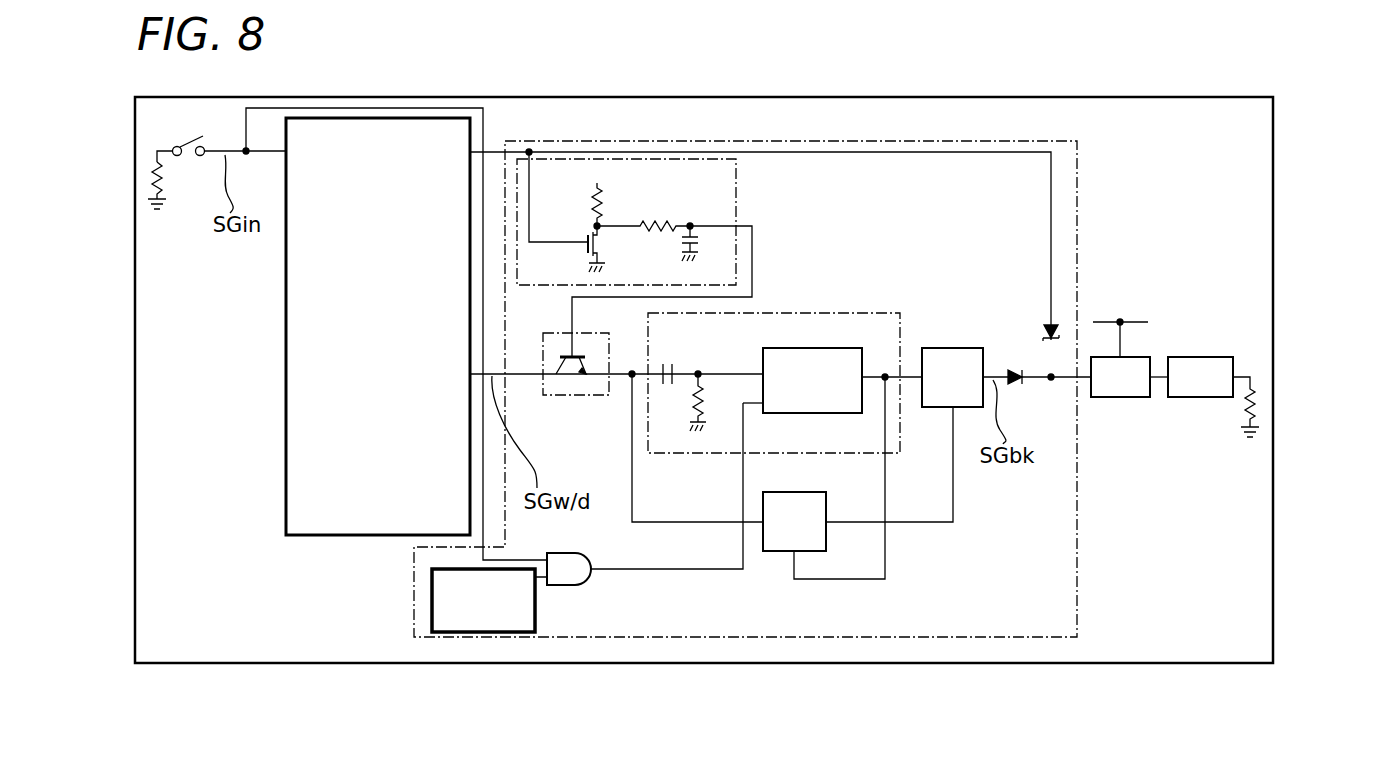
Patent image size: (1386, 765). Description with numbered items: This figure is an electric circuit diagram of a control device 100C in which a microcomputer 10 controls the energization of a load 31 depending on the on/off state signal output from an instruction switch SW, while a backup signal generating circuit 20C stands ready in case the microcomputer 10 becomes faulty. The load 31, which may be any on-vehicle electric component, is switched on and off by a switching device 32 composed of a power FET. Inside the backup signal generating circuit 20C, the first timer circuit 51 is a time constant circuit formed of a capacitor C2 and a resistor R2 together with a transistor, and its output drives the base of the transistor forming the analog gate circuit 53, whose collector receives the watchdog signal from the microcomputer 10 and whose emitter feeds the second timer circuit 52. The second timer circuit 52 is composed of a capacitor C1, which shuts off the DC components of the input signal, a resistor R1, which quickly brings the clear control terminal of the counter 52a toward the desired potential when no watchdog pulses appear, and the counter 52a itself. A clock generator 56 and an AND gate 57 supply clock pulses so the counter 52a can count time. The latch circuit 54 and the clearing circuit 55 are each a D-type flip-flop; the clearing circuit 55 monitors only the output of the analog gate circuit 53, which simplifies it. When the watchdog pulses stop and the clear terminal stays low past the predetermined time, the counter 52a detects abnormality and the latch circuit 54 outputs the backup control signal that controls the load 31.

The control device 100C is at (1273, 535).
The microcomputer 10 is at (286, 378).
The backup signal generating circuit 20C is at (1077, 568).
The instruction switch SW is at (190, 144).
The first timer circuit 51 is at (667, 258).
The resistor R2 is at (643, 212).
The capacitor C2 is at (683, 237).
The second timer circuit 52 is at (774, 344).
The counter 52a is at (797, 348).
The capacitor C1 is at (676, 366).
The resistor R1 is at (713, 402).
The analog gate circuit 53 is at (594, 397).
The latch circuit 54 is at (960, 348).
The clearing circuit 55 is at (777, 551).
The clock generator 56 is at (484, 632).
The AND gate 57 is at (563, 585).
The switching device 32 is at (1122, 397).
The load 31 is at (1197, 397).